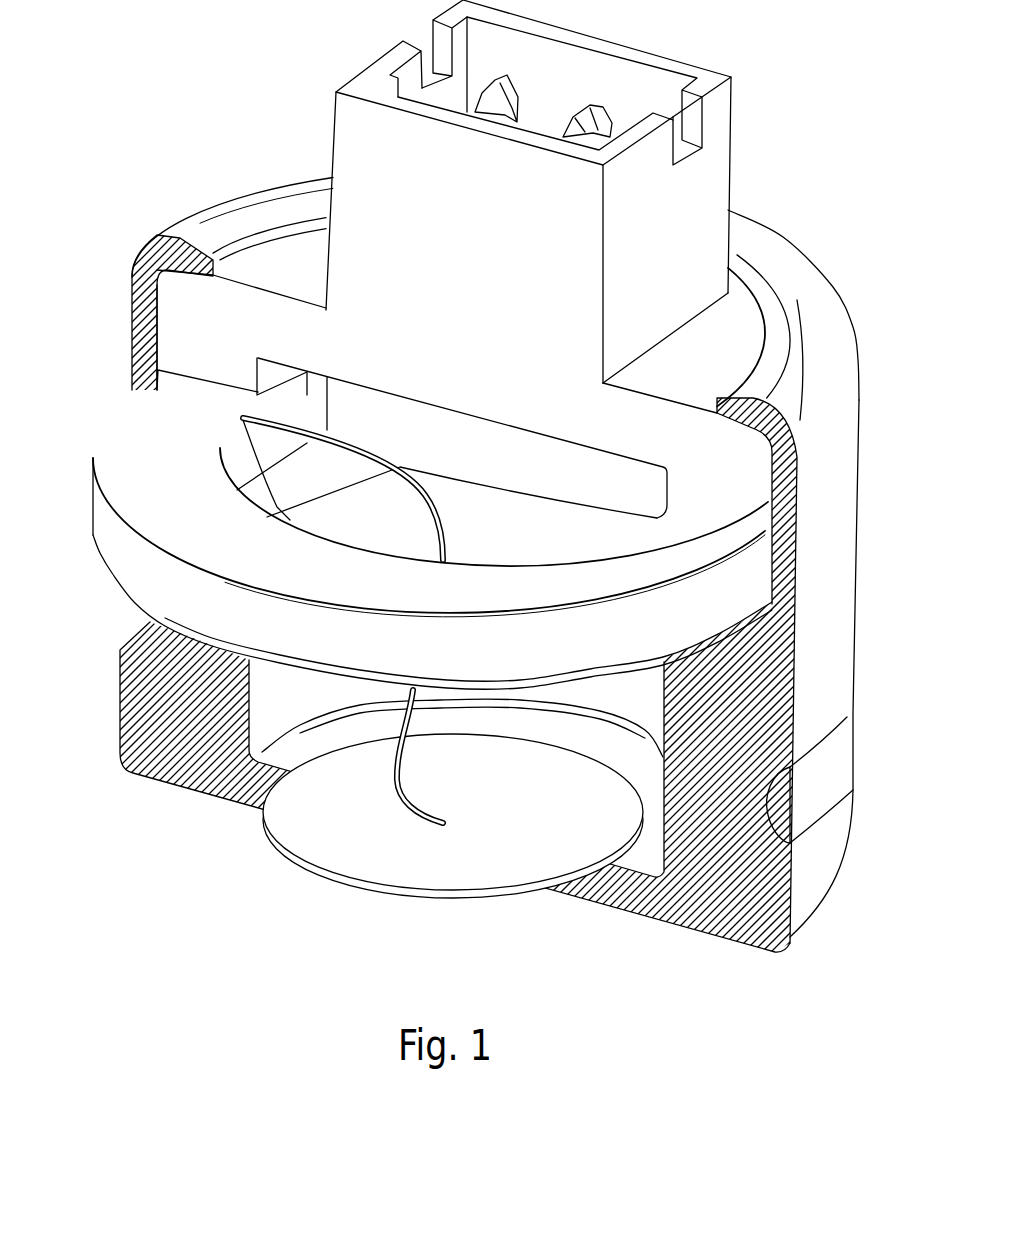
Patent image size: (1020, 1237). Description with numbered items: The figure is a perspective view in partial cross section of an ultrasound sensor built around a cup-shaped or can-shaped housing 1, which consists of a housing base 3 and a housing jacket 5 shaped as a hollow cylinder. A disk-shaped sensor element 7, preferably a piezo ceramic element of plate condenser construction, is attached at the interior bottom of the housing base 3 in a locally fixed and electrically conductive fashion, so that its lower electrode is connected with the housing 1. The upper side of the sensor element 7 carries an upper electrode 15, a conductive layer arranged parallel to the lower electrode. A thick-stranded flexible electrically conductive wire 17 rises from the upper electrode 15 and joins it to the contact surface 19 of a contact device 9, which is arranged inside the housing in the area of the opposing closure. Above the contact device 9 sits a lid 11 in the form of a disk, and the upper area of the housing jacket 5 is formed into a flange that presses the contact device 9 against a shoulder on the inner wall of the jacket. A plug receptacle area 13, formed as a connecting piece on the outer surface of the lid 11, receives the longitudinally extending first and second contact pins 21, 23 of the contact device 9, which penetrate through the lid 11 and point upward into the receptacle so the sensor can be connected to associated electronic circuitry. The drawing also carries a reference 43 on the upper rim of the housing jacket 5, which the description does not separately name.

The housing 1 is at (103, 794).
The housing base 3 is at (599, 884).
The housing jacket 5 is at (793, 691).
The sensor element 7 is at (310, 881).
The contact device 9 is at (614, 590).
The lid 11 is at (720, 334).
The plug receptacle area 13 is at (722, 178).
The upper electrode 15 is at (443, 848).
The wire 17 is at (437, 520).
The contact surface 19 is at (190, 389).
The first contact pin 21 is at (505, 93).
The second contact pin 23 is at (597, 118).
The annular rim 43 is at (803, 388).